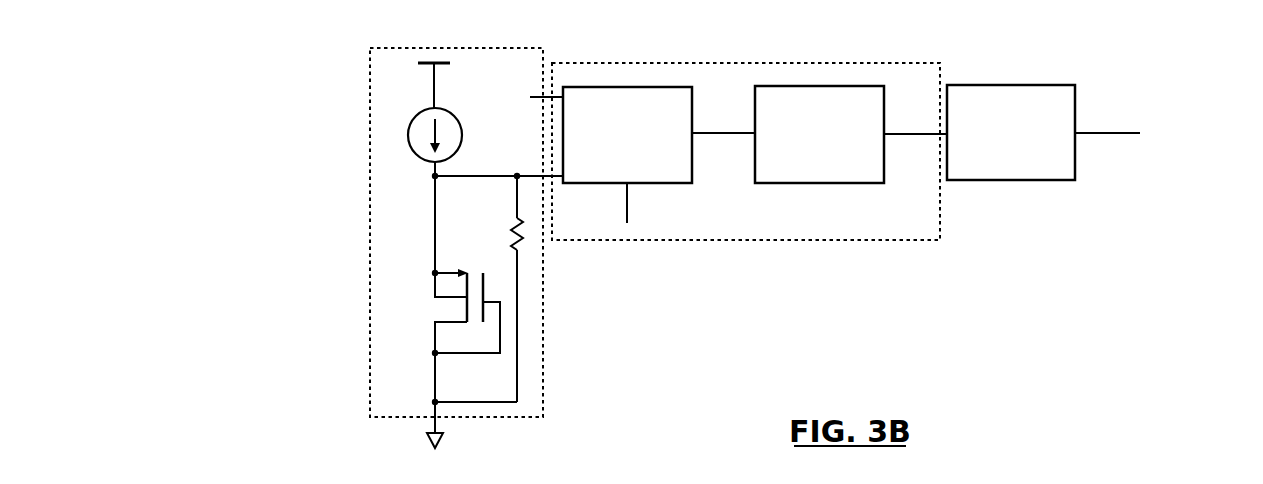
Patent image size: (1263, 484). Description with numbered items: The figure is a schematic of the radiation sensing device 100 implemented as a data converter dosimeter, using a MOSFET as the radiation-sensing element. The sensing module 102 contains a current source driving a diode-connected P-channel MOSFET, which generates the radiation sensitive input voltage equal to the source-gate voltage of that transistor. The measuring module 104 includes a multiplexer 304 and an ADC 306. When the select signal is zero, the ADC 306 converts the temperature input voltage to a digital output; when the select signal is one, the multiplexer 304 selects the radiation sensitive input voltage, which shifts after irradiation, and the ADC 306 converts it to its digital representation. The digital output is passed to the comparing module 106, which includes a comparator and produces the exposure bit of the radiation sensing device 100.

The radiation sensing device 100 is at (284, 75).
The sensing module 102 is at (472, 47).
The measuring module 104 is at (752, 63).
The comparing module 106 is at (1015, 85).
The multiplexer 304 is at (662, 183).
The ADC 306 is at (820, 183).